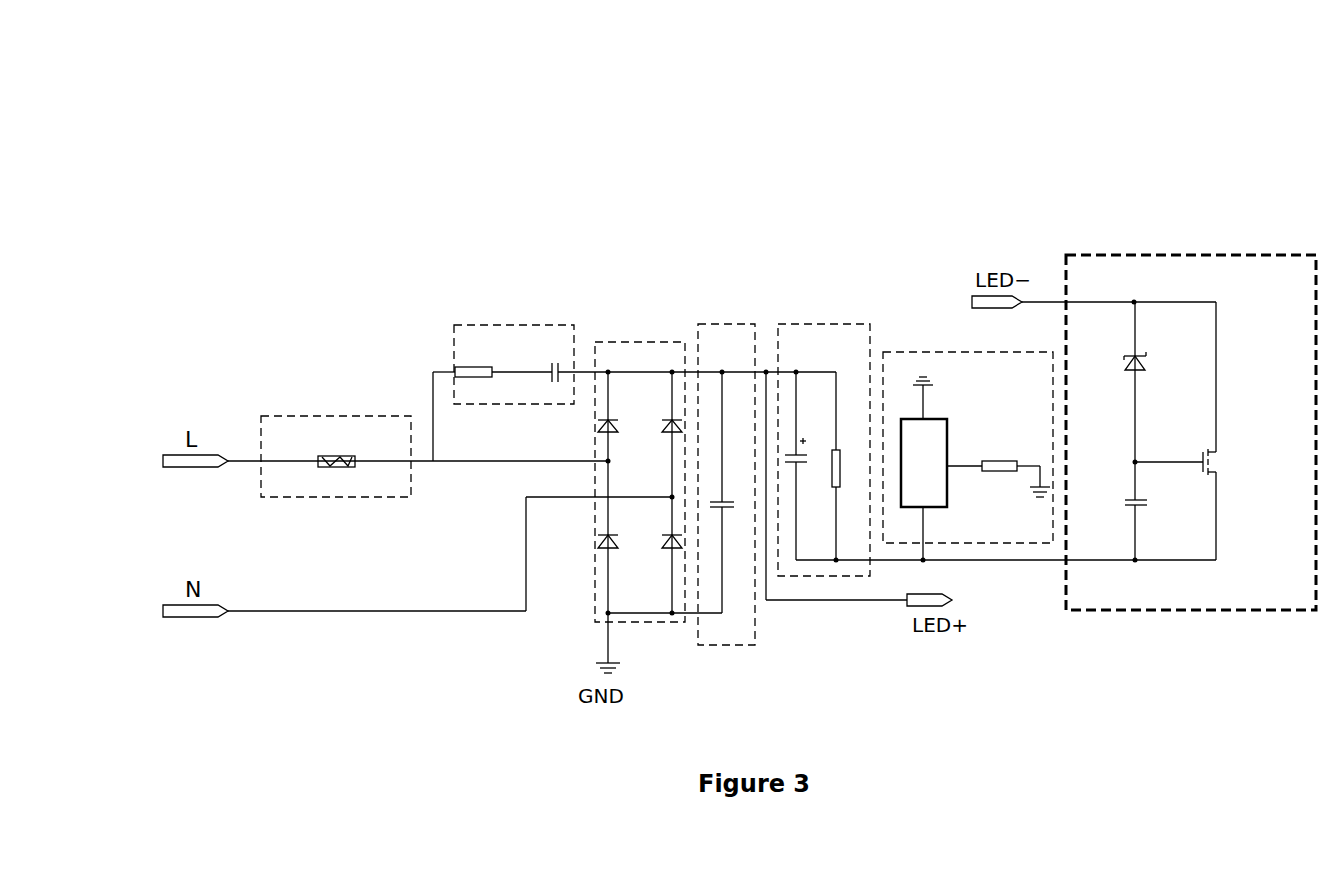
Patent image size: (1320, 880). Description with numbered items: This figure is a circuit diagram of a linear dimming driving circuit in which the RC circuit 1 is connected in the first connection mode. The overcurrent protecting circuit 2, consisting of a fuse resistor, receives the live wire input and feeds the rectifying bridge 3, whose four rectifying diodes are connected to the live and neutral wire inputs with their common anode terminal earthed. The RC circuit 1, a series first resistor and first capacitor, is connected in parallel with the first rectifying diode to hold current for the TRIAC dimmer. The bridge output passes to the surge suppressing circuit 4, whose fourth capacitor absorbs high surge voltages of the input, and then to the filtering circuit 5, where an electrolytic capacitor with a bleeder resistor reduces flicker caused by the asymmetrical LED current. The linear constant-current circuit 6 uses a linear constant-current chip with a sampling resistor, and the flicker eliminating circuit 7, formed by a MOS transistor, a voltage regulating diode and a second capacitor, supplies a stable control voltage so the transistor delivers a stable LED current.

The RC circuit 1 is at (521, 314).
The overcurrent protecting circuit 2 is at (336, 407).
The rectifying bridge 3 is at (633, 432).
The surge suppressing circuit 4 is at (760, 425).
The filtering circuit 5 is at (850, 383).
The linear constant-current circuit 6 is at (968, 375).
The flicker eliminating circuit 7 is at (1191, 380).